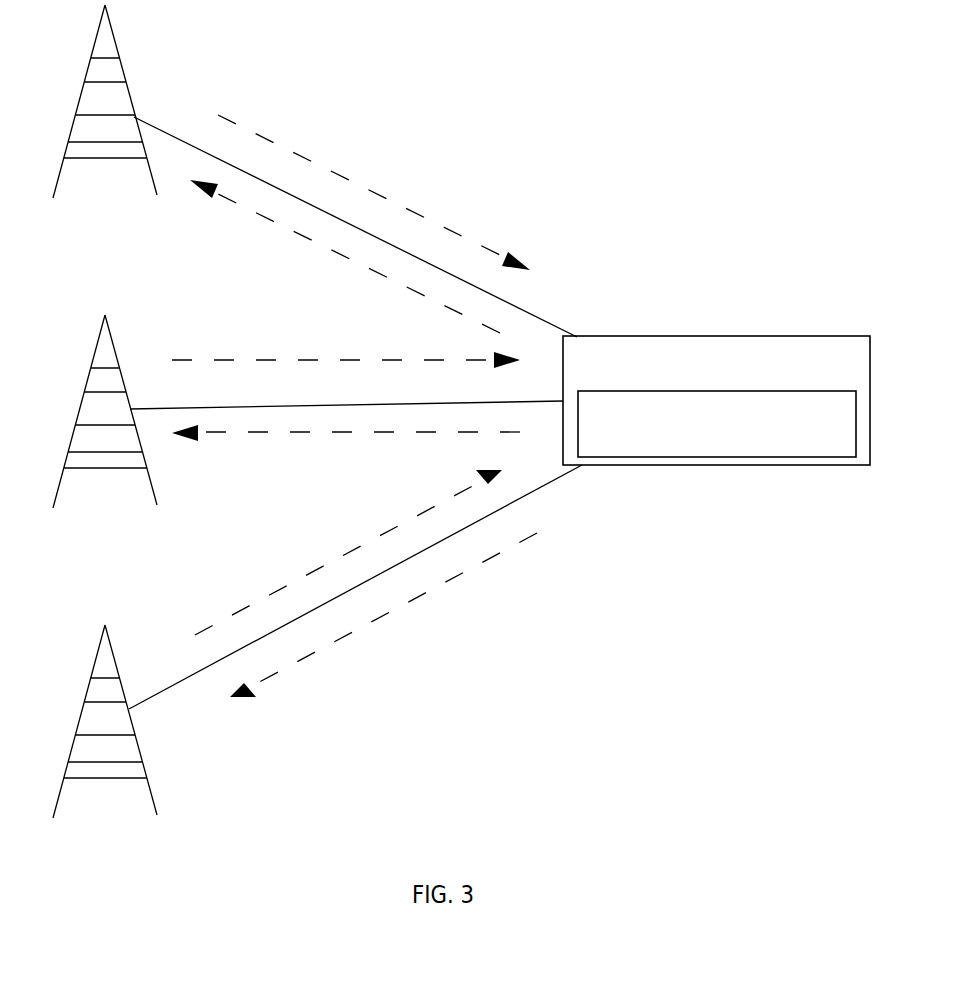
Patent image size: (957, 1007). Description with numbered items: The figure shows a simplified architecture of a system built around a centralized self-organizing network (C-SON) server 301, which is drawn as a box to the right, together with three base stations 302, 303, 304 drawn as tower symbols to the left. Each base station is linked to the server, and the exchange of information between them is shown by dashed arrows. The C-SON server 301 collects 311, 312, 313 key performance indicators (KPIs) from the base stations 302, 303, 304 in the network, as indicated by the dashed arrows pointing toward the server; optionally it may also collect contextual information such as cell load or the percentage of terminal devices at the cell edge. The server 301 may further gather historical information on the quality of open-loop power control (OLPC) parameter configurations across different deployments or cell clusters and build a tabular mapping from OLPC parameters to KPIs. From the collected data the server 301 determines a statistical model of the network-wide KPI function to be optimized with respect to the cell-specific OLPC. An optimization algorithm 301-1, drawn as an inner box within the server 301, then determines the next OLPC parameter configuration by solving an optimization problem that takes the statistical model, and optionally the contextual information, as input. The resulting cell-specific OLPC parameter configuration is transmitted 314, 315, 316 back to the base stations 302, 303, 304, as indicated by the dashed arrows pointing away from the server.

The centralized self-organizing network server 301 is at (716, 400).
The optimization algorithm 301-1 is at (717, 424).
The base station 302 is at (105, 117).
The base station 303 is at (105, 426).
The base station 304 is at (105, 737).
The collecting of KPIs 311 is at (374, 192).
The collecting of KPIs 312 is at (346, 346).
The collecting of KPIs 313 is at (348, 552).
The transmitting of OLPC parameter configuration 314 is at (345, 256).
The transmitting of OLPC parameter configuration 315 is at (346, 445).
The transmitting of OLPC parameter configuration 316 is at (383, 615).